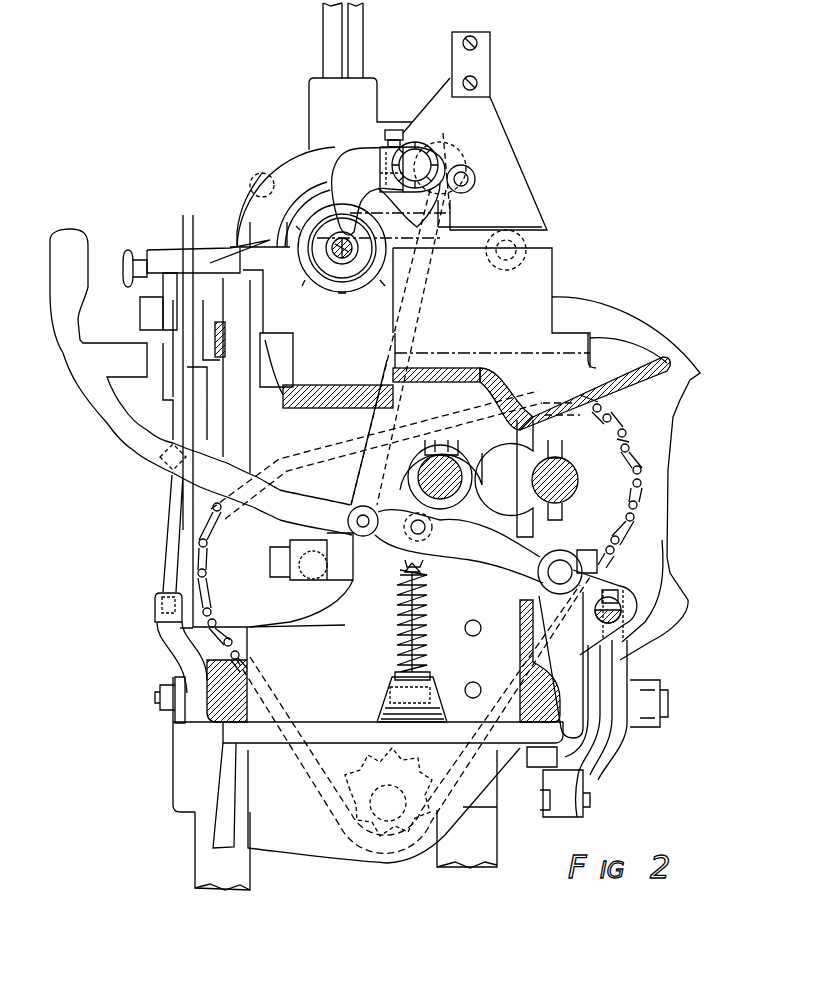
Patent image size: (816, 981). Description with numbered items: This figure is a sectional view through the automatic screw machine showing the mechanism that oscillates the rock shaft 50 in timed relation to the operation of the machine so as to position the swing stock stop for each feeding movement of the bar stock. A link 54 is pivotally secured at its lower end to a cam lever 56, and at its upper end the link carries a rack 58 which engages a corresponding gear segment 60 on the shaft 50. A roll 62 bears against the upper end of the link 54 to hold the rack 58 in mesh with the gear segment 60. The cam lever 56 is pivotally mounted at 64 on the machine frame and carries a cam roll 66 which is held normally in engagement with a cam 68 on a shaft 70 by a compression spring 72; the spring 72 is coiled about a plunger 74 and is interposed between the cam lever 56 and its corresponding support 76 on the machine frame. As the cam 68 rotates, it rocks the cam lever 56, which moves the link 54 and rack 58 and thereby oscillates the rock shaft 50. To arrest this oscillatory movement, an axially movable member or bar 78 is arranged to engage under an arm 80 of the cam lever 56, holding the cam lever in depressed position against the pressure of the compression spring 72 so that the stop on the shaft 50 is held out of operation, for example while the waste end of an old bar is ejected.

The shaft 50 is at (410, 162).
The link 54 is at (420, 303).
The cam lever 56 is at (443, 547).
The rack 58 is at (440, 142).
The gear segment 60 is at (394, 130).
The roll 62 is at (476, 180).
The pivot 64 is at (566, 560).
The cam roll 66 is at (415, 518).
The cam 68 is at (472, 452).
The shaft 70 is at (453, 487).
The compression spring 72 is at (397, 623).
The plunger 74 is at (397, 647).
The support 76 is at (387, 703).
The axially movable member or bar 78 is at (605, 618).
The arm 80 is at (600, 583).